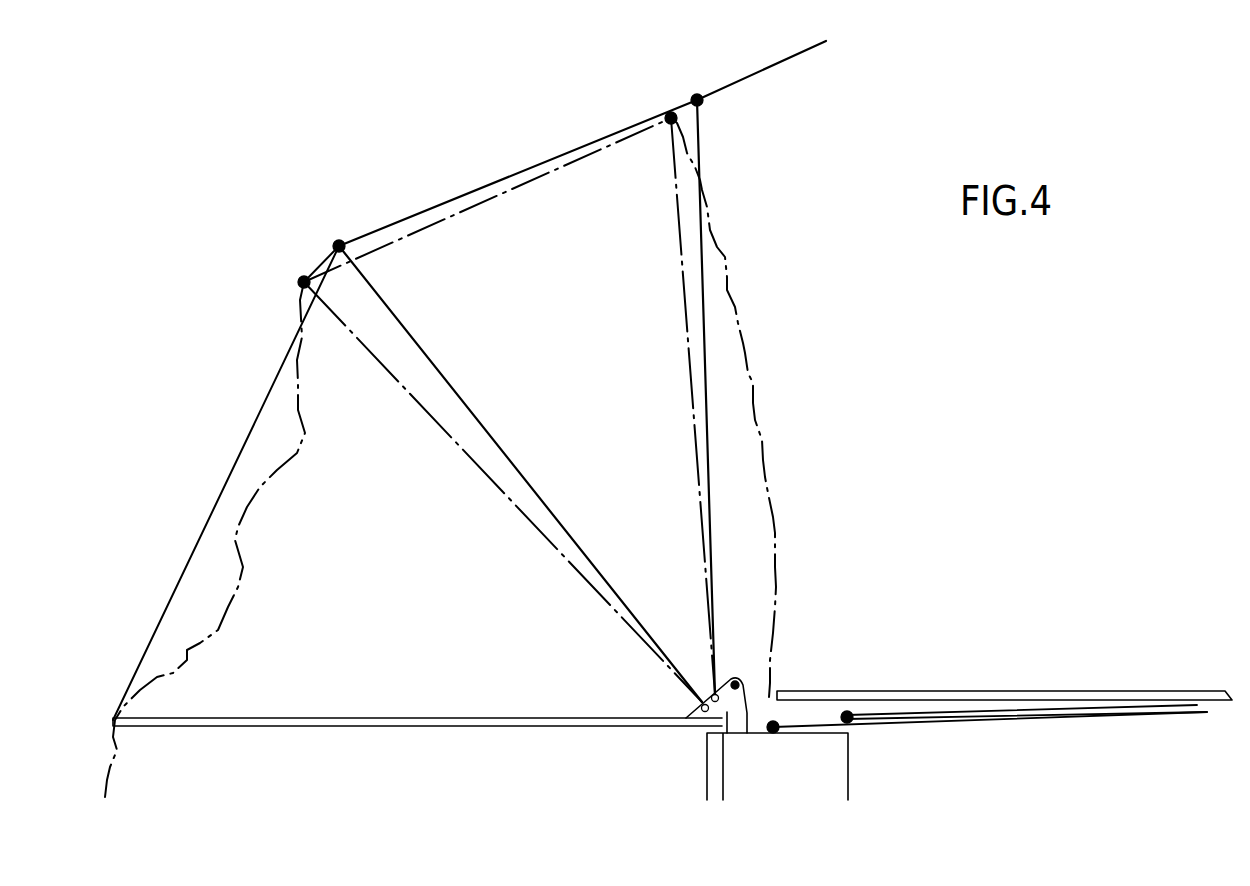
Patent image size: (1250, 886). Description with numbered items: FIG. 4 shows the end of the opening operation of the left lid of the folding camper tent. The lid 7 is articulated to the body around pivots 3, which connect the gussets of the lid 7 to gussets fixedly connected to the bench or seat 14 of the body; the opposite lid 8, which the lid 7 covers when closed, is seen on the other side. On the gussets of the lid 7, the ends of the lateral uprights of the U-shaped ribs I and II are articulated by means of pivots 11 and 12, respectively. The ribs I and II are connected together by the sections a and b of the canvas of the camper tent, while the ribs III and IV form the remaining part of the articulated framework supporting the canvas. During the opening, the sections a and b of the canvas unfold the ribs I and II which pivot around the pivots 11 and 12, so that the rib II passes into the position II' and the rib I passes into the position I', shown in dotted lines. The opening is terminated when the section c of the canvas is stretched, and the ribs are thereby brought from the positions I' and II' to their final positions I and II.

The section of the canvas a is at (225, 487).
The section of the canvas b is at (534, 166).
The section of the canvas c is at (751, 71).
The rib I is at (520, 474).
The position of rib I I' is at (503, 492).
The rib II is at (710, 397).
The position of rib II II' is at (677, 406).
The rib III is at (943, 723).
The rib IV is at (1055, 712).
The pivot 3 is at (737, 681).
The lid 7 is at (424, 716).
The lid 8 is at (1052, 691).
The pivot 11 is at (704, 713).
The pivot 12 is at (714, 693).
The bench or seat 14 is at (777, 761).